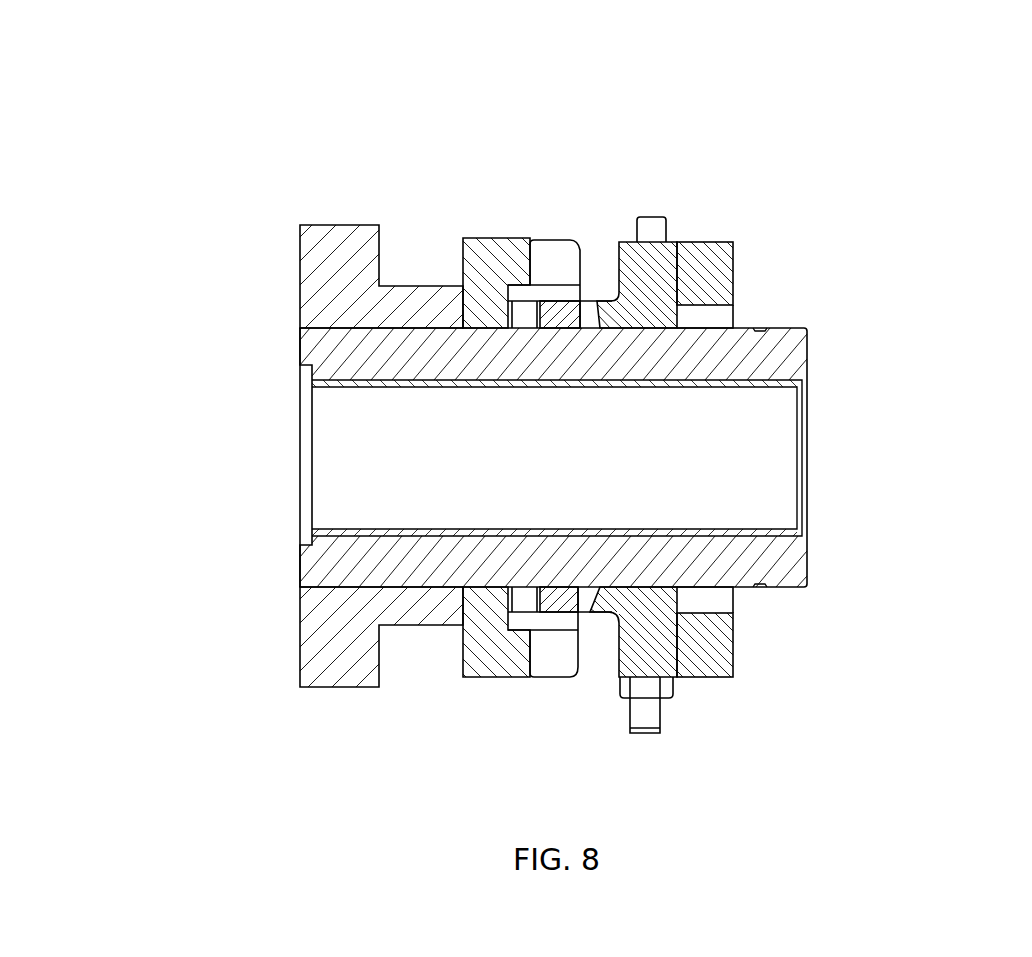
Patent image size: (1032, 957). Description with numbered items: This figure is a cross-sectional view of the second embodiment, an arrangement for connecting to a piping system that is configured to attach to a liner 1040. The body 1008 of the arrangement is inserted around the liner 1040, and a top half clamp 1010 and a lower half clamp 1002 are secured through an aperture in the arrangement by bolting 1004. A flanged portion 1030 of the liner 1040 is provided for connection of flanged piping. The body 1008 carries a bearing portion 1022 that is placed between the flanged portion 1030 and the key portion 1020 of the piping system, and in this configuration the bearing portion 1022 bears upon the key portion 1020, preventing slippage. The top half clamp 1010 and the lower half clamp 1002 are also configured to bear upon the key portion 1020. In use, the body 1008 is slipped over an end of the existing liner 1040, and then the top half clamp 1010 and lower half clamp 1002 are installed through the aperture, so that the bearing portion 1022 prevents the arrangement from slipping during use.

The bolting 1004 is at (584, 408).
The body 1008 is at (388, 400).
The flanged portion 1030 is at (325, 272).
The liner 1040 is at (323, 355).
The bearing portion 1022 is at (482, 246).
The key portion 1020 is at (567, 333).
The top half clamp 1010 is at (660, 272).
The lower half clamp 1002 is at (638, 650).